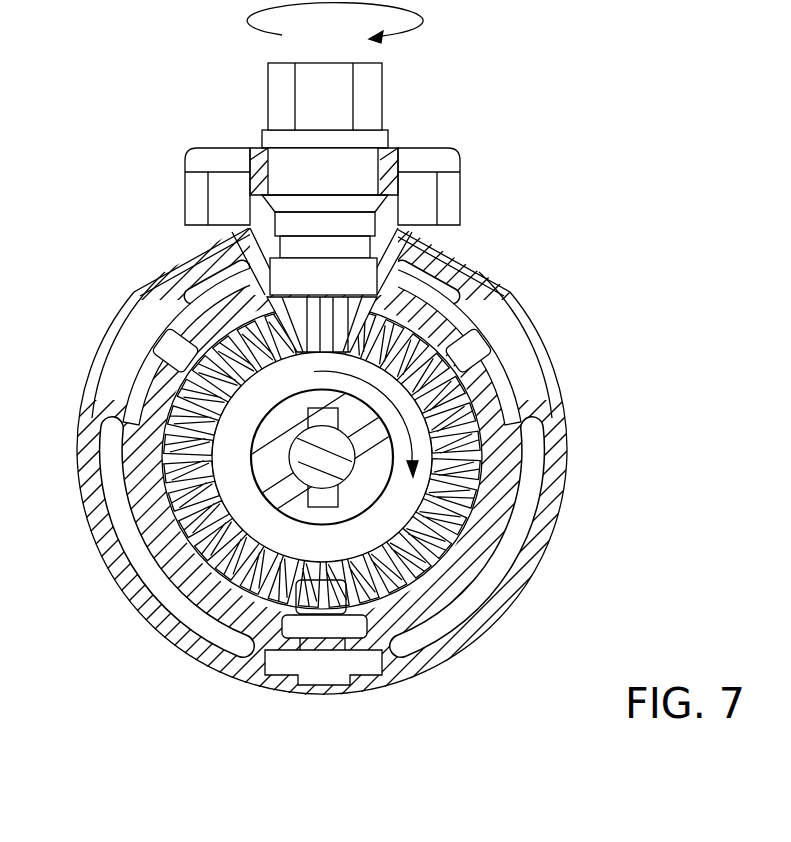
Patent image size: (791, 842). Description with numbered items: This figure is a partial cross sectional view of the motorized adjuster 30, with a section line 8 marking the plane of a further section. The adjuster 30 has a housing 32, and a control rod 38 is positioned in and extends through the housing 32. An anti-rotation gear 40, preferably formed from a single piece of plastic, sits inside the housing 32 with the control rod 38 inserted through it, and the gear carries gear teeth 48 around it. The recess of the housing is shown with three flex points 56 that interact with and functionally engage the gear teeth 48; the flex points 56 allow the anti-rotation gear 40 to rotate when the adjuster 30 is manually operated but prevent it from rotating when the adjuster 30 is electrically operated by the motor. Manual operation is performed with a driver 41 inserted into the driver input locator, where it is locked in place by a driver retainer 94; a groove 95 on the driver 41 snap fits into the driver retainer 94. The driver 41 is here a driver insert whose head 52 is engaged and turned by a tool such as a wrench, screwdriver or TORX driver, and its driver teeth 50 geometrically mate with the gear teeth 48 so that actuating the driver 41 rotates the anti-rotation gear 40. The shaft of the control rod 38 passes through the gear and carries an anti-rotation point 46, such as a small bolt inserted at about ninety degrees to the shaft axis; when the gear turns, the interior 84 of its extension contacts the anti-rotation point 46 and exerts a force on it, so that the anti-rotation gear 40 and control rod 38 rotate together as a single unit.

The adjuster 30 is at (76, 90).
The housing 32 is at (128, 612).
The control rod 38 is at (388, 436).
The anti-rotation gear 40 is at (382, 477).
The driver 41 is at (390, 80).
The anti-rotation point 46 is at (343, 493).
The gear teeth 48 is at (488, 311).
The driver teeth 50 is at (275, 328).
The head 52 is at (280, 100).
The flex point 56 is at (200, 357).
The interior 84 is at (276, 452).
The driver retainer 94 is at (385, 170).
The groove 95 is at (342, 168).
The section line 8- 8 is at (163, 640).